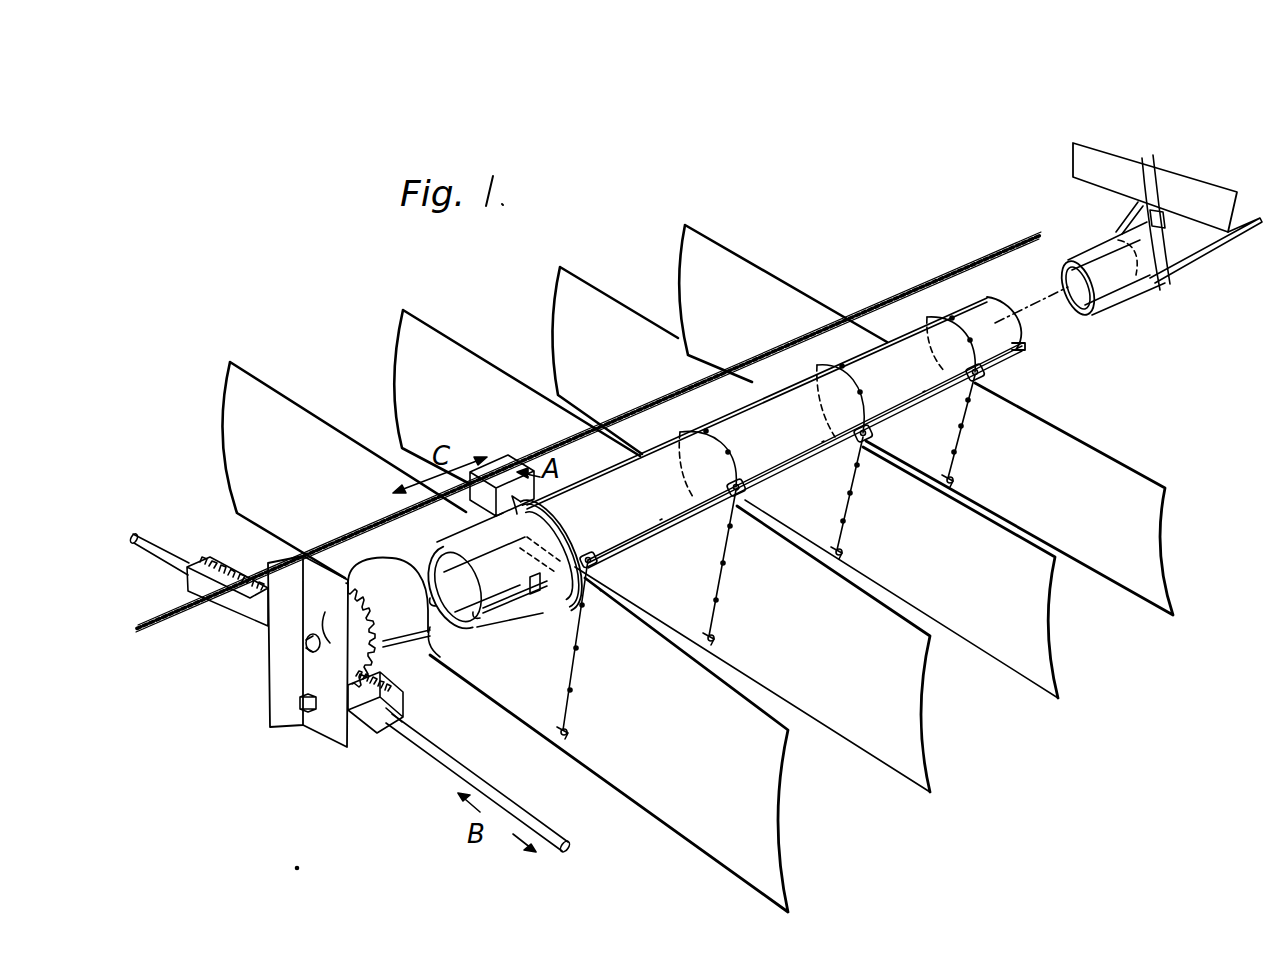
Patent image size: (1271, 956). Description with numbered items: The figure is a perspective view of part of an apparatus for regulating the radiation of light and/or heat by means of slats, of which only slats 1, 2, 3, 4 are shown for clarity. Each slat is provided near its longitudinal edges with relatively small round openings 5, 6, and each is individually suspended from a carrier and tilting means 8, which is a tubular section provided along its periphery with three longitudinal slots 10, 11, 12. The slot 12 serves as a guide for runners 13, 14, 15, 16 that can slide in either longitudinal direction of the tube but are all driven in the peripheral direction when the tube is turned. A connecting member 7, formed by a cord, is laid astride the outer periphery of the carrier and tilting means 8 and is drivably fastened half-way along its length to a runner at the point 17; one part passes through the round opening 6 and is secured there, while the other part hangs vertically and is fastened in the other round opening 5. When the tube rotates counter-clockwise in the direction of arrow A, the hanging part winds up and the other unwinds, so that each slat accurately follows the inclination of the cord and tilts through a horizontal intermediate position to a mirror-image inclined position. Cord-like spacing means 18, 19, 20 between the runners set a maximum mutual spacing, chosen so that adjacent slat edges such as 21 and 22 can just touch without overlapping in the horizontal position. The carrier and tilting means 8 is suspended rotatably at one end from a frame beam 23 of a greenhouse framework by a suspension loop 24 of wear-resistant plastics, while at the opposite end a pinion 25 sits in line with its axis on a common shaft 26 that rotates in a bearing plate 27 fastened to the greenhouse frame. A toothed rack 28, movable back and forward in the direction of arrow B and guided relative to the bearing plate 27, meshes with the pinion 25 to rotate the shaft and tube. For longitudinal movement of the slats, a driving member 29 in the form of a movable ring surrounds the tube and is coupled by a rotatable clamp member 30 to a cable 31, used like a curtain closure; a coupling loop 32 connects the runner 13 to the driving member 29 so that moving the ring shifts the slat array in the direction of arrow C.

The slat 1 is at (768, 755).
The slat 2 is at (910, 662).
The slat 3 is at (1038, 585).
The slat 4 is at (572, 735).
The round opening 5 is at (567, 736).
The round opening 6 is at (712, 515).
The connecting member 7 is at (625, 548).
The carrier and tilting means 8 is at (1003, 330).
The longitudinal slot 10 is at (443, 545).
The longitudinal slot 11 is at (440, 628).
The longitudinal slot 12 is at (500, 620).
The runner 13 is at (600, 565).
The runner 14 is at (748, 493).
The runner 15 is at (870, 432).
The runner 16 is at (987, 365).
The fastening point 17 is at (740, 472).
The spacing means 18 is at (667, 518).
The spacing means 19 is at (822, 442).
The spacing means 20 is at (923, 392).
The slat edge 21 is at (705, 670).
The slat edge 22 is at (788, 700).
The frame beam 23 is at (1085, 162).
The suspension loop 24 is at (1127, 210).
The pinion 25 is at (365, 606).
The common shaft 26 is at (308, 652).
The bearing plate 27 is at (285, 653).
The toothed rack 28 is at (392, 703).
The driving member 29 is at (525, 547).
The rotatable clamp member 30 is at (497, 468).
The cable 31 is at (645, 408).
The coupling loop 32 is at (574, 518).